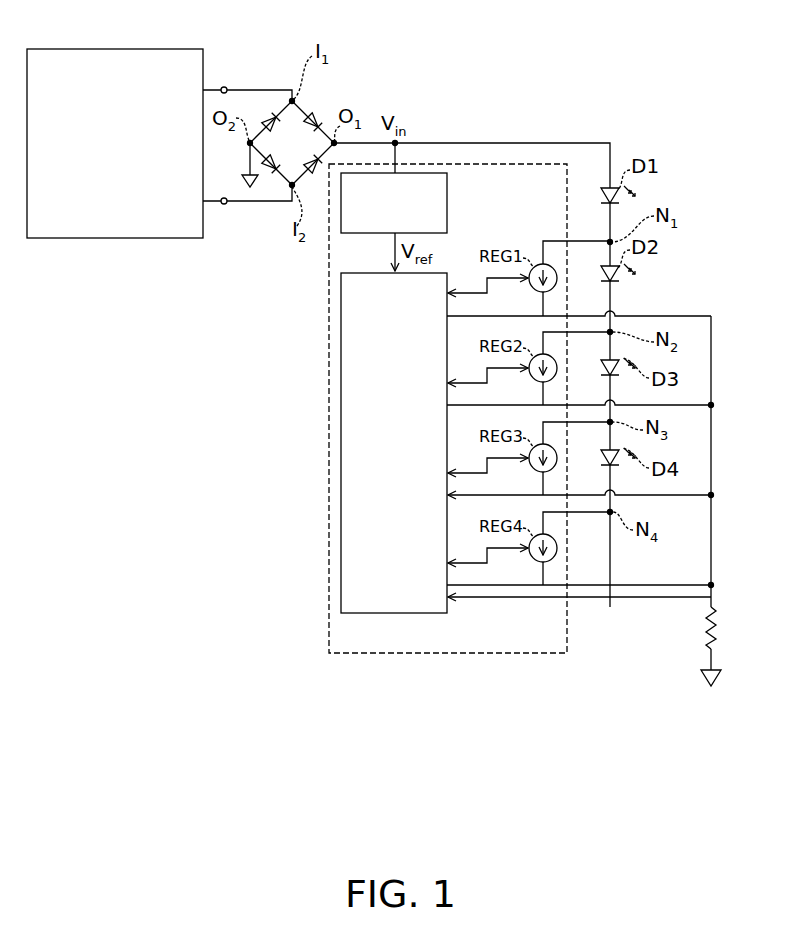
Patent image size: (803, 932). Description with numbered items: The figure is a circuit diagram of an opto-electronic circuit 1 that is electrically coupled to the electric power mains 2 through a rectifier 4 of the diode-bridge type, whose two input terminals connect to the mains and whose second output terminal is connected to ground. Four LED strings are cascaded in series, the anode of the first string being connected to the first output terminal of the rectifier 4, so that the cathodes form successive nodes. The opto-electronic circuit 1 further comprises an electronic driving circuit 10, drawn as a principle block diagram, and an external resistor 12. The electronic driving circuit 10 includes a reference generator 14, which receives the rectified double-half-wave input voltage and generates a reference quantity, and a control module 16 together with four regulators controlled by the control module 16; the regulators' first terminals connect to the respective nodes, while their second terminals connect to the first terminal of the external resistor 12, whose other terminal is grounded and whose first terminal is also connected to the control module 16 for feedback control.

The opto-electronic circuit 1 is at (647, 92).
The electric power mains 2 is at (60, 58).
The rectifier 4 is at (326, 100).
The electronic driving circuit 10 is at (412, 657).
The external resistor 12 is at (716, 627).
The reference generator 14 is at (382, 215).
The control module 16 is at (446, 606).